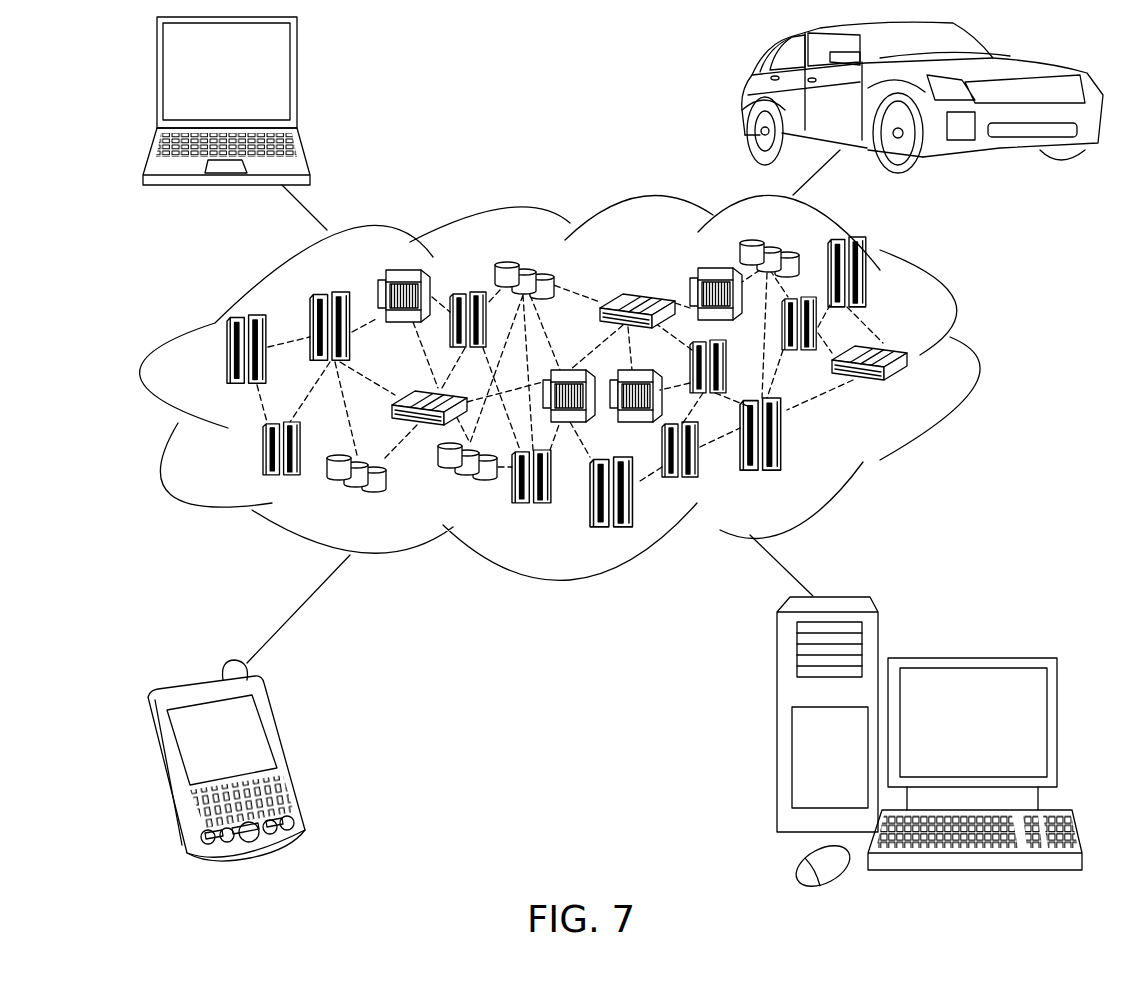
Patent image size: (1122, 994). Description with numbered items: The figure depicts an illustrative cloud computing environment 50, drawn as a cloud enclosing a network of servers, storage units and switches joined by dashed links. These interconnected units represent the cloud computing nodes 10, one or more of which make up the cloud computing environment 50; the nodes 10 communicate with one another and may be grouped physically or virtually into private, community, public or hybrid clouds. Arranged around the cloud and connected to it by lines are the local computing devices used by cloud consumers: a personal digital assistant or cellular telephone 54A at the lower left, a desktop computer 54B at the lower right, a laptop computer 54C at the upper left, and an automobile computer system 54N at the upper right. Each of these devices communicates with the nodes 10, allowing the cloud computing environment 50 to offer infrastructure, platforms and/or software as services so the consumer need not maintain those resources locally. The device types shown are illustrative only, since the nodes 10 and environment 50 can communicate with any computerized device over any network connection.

The cloud computing node 10 is at (917, 392).
The cloud computing environment 50 is at (584, 387).
The personal digital assistant or cellular telephone 54A is at (287, 752).
The desktop computer 54B is at (970, 657).
The laptop computer 54C is at (297, 78).
The automobile computer system 54N is at (742, 97).